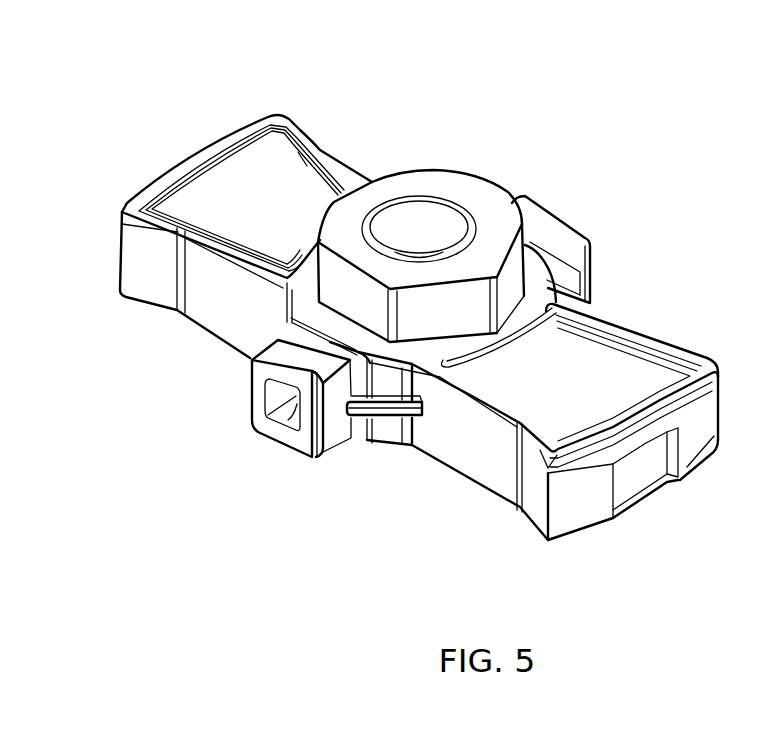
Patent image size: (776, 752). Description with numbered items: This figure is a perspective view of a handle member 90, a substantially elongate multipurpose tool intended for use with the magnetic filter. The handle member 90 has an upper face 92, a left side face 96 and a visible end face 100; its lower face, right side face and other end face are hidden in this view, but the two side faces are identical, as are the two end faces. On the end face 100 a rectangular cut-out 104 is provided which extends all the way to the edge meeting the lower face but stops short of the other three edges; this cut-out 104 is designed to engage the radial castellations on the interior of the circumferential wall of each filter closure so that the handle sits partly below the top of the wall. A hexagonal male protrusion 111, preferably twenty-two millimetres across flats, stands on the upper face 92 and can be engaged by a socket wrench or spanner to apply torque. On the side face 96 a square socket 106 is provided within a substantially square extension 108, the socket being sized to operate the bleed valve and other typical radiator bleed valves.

The handle member 90 is at (641, 131).
The upper face 92 is at (610, 363).
The left side face 96 is at (480, 453).
The end face 100 is at (577, 507).
The rectangular cut-out 104 is at (633, 482).
The square socket 106 is at (293, 417).
The square extension 108 is at (338, 432).
The hexagonal male protrusion 111 is at (458, 193).